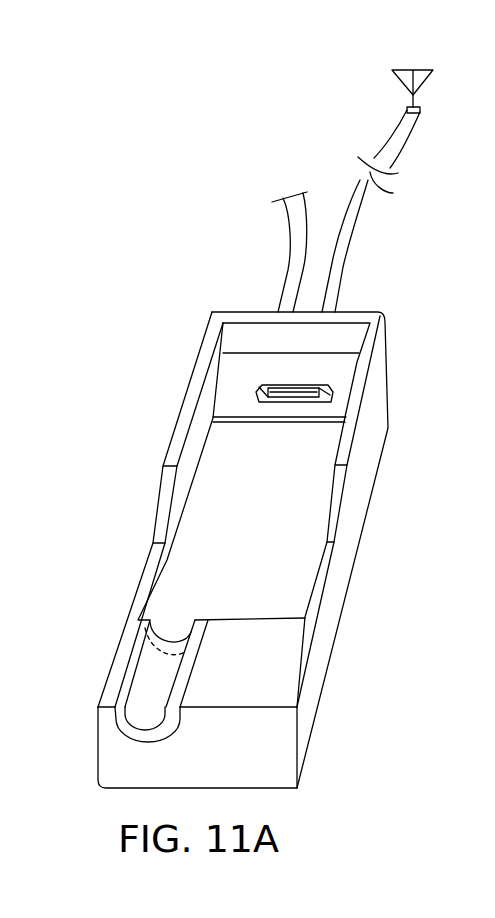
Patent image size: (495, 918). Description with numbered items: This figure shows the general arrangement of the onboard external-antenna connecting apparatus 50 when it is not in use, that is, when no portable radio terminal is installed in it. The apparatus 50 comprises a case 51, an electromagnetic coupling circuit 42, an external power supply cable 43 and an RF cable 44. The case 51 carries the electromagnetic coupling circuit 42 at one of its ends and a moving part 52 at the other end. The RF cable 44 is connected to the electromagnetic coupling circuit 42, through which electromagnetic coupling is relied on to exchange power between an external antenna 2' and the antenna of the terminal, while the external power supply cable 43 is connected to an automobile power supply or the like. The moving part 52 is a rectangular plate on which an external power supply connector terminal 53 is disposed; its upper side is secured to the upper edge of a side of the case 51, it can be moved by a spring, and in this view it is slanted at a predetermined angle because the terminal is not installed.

The onboard external-antenna connecting apparatus 50 is at (129, 242).
The case 51 is at (358, 510).
The moving part 52 is at (350, 367).
The external power supply connector terminal 53 is at (257, 393).
The electromagnetic coupling circuit 42 is at (147, 672).
The external power supply cable 43 is at (292, 268).
The RF cable 44 is at (340, 268).
The external antenna 2' is at (442, 95).